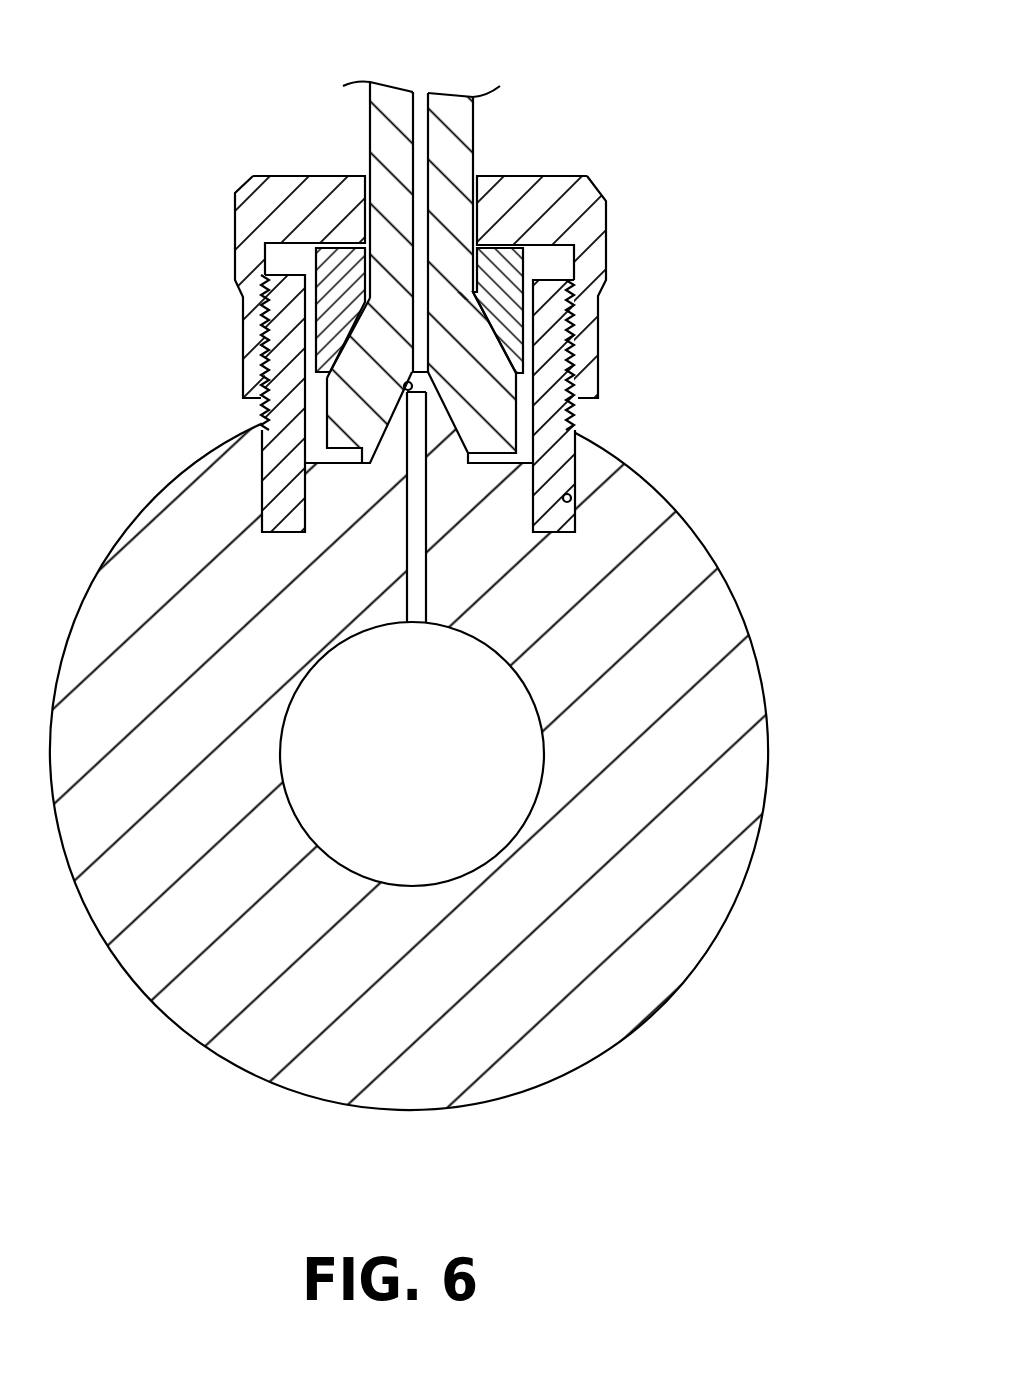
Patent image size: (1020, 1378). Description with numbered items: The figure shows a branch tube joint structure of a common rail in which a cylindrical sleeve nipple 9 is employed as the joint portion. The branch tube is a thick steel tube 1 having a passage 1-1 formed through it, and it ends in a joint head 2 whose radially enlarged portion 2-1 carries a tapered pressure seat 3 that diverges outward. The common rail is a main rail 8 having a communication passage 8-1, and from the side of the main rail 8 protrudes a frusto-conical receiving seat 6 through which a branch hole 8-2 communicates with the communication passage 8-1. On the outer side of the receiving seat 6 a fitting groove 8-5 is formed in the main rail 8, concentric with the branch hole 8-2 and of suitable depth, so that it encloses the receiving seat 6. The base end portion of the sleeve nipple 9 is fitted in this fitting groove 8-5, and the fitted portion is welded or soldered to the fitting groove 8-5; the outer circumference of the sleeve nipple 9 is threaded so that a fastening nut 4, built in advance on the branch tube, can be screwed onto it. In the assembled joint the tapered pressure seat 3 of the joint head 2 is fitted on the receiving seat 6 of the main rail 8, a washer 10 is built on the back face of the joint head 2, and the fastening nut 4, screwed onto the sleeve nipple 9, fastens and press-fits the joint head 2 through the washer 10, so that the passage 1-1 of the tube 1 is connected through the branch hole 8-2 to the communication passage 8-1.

The thick steel tube 1 is at (465, 128).
The passage 1-1 is at (422, 92).
The joint head 2 is at (526, 396).
The radially enlarged portion 2-1 is at (345, 414).
The pressure seat 3 is at (404, 385).
The fastening nut 4 is at (582, 212).
The receiving seat 6 is at (347, 465).
The main rail 8 is at (722, 631).
The communication passage 8-1 is at (548, 740).
The branch hole 8-2 is at (413, 624).
The fitting groove 8-5 is at (577, 499).
The sleeve nipple 9 is at (574, 433).
The washer 10 is at (513, 299).